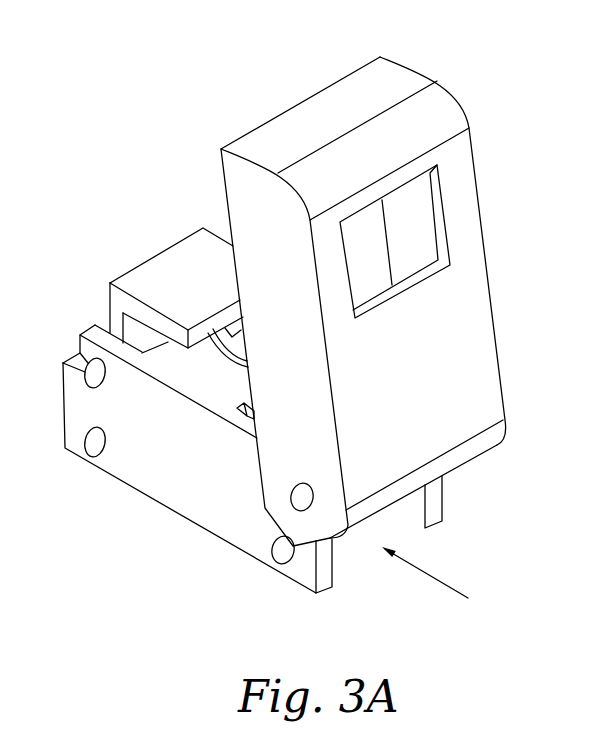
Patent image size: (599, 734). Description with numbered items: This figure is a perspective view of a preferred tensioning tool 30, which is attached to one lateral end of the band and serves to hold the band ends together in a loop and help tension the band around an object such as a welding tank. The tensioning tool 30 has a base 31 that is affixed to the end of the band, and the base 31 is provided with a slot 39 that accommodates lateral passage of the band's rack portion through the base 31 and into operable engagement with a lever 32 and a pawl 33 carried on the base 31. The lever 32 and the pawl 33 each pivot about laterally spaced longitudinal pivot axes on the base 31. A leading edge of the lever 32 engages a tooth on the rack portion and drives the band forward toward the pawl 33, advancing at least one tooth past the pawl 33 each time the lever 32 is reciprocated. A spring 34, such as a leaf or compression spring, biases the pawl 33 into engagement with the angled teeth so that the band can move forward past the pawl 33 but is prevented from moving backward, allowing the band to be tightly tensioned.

The tensioning tool 30 is at (100, 100).
The base 31 is at (172, 468).
The lever 32 is at (437, 115).
The pawl 33 is at (147, 285).
The spring 34 is at (235, 345).
The slot in base 39 is at (447, 580).